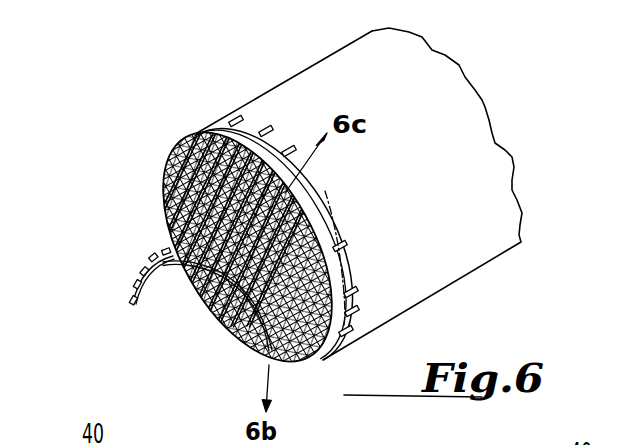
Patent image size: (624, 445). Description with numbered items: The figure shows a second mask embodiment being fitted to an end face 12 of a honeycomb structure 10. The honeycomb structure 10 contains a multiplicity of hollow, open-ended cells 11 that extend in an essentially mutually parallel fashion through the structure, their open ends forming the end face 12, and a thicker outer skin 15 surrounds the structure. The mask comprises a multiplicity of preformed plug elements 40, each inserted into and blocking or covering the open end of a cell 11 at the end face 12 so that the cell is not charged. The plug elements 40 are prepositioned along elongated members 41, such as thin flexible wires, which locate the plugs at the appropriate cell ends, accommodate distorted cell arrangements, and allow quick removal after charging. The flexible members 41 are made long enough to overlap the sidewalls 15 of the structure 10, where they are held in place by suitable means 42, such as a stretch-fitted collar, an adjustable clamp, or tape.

The honeycomb structure 10 is at (495, 101).
The outer skin 15 is at (348, 78).
The cells 11 is at (164, 183).
The end face 12 is at (223, 339).
The plug elements 40 is at (150, 249).
The elongated members 41 is at (226, 124).
The means for holding 42 is at (325, 191).